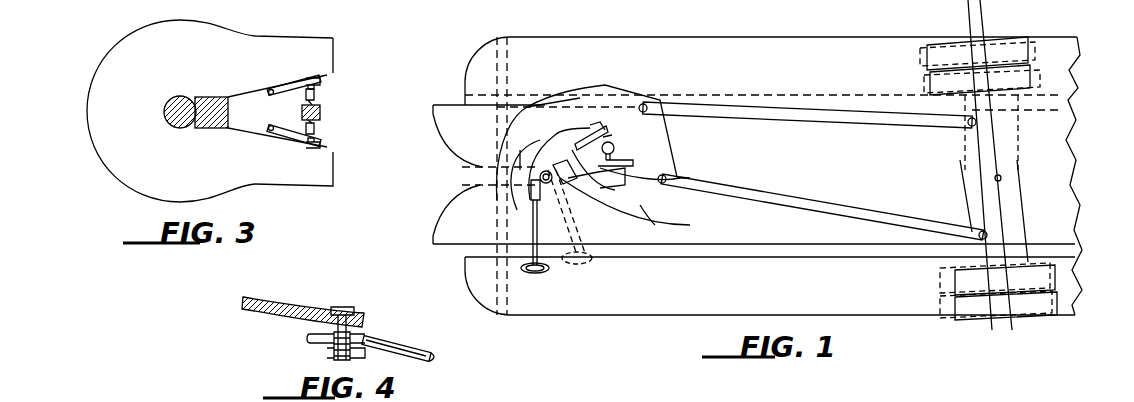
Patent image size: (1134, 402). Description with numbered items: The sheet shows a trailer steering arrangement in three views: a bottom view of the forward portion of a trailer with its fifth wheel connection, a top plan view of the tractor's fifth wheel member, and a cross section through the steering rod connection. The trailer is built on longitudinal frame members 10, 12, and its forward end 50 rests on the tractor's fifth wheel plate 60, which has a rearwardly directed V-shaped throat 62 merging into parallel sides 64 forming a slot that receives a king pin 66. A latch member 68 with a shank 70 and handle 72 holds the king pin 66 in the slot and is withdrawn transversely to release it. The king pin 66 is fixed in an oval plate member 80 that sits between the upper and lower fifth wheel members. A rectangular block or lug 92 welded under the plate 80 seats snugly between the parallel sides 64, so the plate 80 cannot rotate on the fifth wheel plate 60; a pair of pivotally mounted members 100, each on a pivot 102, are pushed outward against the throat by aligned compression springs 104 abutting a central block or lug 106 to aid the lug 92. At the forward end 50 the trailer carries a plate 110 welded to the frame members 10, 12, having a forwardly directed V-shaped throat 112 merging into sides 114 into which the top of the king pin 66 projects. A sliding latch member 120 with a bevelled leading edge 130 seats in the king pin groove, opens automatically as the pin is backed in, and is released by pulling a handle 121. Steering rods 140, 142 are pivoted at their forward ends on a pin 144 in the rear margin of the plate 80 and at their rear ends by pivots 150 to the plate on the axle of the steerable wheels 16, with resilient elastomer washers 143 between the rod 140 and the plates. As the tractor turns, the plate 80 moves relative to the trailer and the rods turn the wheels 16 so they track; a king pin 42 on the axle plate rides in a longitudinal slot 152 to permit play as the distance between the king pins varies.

In FIG. 1, the longitudinal frame member 10 is at (1075, 250).
In FIG. 1, the longitudinal frame member 12 is at (1057, 108).
In FIG. 1, the steerable wheels 16 is at (950, 282).
In FIG. 1, the king pin 42 is at (995, 178).
In FIG. 1, the forward end 50 is at (482, 286).
In FIG. 1, the fifth wheel plate 60 is at (592, 200).
In FIG. 3, the V-shaped throat 62 is at (327, 186).
In FIG. 1, the V-shaped throat 62 is at (592, 150).
In FIG. 3, the parallel sides 64 is at (190, 128).
In FIG. 1, the parallel sides 64 is at (585, 180).
In FIG. 3, the king pin 66 is at (179, 100).
In FIG. 1, the king pin 66 is at (540, 178).
In FIG. 1, the latch member 68 is at (566, 205).
In FIG. 1, the shank 70 is at (618, 227).
In FIG. 1, the handle 72 is at (582, 265).
In FIG. 4, the plate member 80 is at (300, 308).
In FIG. 1, the plate member 80 is at (647, 210).
In FIG. 3, the rectangular block or lug 92 is at (229, 112).
In FIG. 1, the rectangular block or lug 92 is at (580, 150).
In FIG. 3, the pivotally mounted members 100 is at (322, 146).
In FIG. 1, the pivotally mounted members 100 is at (615, 164).
In FIG. 3, the pivot 102 is at (274, 132).
In FIG. 3, the compression springs 104 is at (316, 129).
In FIG. 3, the centrally disposed block or lug 106 is at (321, 112).
In FIG. 1, the centrally disposed block or lug 106 is at (616, 150).
In FIG. 1, the plate 110 is at (448, 132).
In FIG. 1, the V-shaped throat 112 is at (462, 193).
In FIG. 1, the sides 114 is at (528, 190).
In FIG. 1, the latch member 120 is at (550, 222).
In FIG. 1, the handle 121 is at (542, 272).
In FIG. 1, the leading edge 130 is at (550, 140).
In FIG. 4, the steering rod 140 is at (412, 349).
In FIG. 1, the steering rod 140 is at (756, 196).
In FIG. 1, the steering rod 142 is at (798, 118).
In FIG. 4, the resilient elastomer washer 143 is at (325, 349).
In FIG. 4, the pin 144 is at (345, 308).
In FIG. 1, the pin 144 is at (668, 178).
In FIG. 1, the pivots 150 is at (975, 229).
In FIG. 1, the longitudinal slot 152 is at (936, 193).